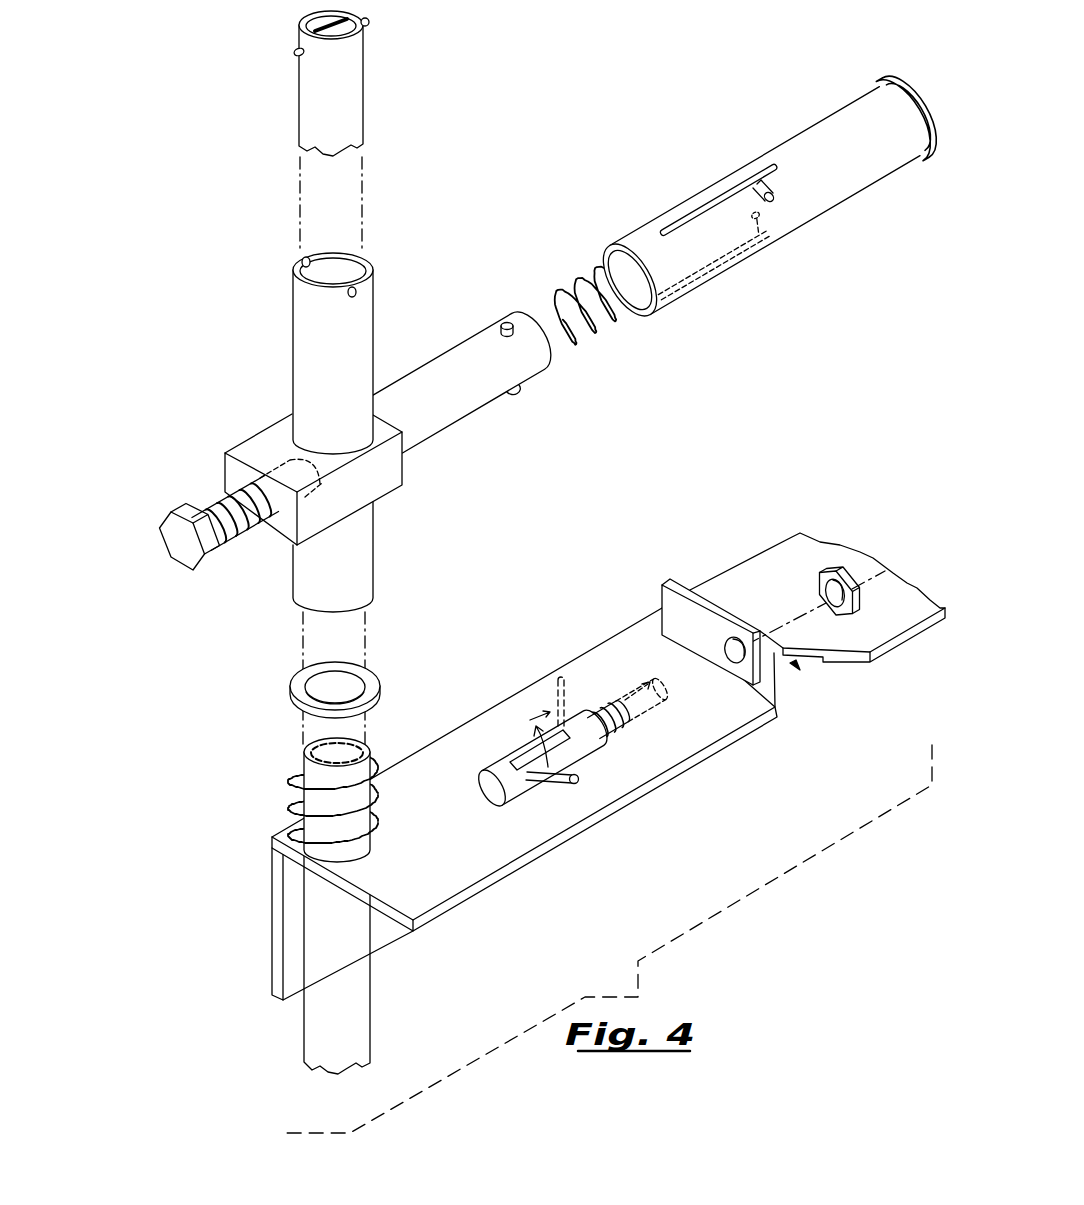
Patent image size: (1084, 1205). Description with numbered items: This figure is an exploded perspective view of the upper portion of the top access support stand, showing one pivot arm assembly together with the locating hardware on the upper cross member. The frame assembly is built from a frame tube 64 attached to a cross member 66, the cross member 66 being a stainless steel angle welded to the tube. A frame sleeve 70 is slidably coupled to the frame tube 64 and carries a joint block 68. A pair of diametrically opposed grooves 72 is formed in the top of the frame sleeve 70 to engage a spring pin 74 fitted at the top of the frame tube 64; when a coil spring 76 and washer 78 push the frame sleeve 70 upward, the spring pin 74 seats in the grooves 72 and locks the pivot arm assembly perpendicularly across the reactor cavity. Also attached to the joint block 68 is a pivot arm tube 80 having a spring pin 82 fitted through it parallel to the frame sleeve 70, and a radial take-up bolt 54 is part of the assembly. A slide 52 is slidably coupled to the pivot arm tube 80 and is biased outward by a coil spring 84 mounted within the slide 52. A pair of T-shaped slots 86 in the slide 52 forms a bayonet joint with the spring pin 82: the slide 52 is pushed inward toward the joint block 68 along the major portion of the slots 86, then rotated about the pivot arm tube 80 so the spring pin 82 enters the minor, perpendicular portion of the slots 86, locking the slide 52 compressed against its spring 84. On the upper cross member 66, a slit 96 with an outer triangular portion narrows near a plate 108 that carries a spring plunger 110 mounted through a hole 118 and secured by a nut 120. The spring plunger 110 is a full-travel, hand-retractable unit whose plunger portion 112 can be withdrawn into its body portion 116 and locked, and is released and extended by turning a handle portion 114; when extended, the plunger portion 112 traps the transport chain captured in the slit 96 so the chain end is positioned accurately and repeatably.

The spring-loaded slide 52 is at (838, 137).
The radial take-up bolt 54 is at (190, 572).
The frame tube 64 is at (318, 108).
The cross member 66 is at (768, 573).
The joint block 68 is at (384, 468).
The frame sleeve 70 is at (318, 366).
The grooves 72 is at (303, 260).
The spring pin 74 is at (293, 52).
The coil spring 76 is at (296, 786).
The washer 78 is at (292, 690).
The pivot arm tube 80 is at (462, 358).
The spring pin 82 is at (506, 321).
The coil spring 84 is at (582, 292).
The T-shaped slots 86 is at (752, 184).
The slit 96 is at (797, 665).
The plate 108 is at (673, 606).
The spring plunger 110 is at (569, 785).
The plunger portion 112 is at (653, 695).
The handle portion 114 is at (565, 786).
The body portion 116 is at (518, 790).
The hole 118 is at (732, 664).
The nut 120 is at (850, 580).